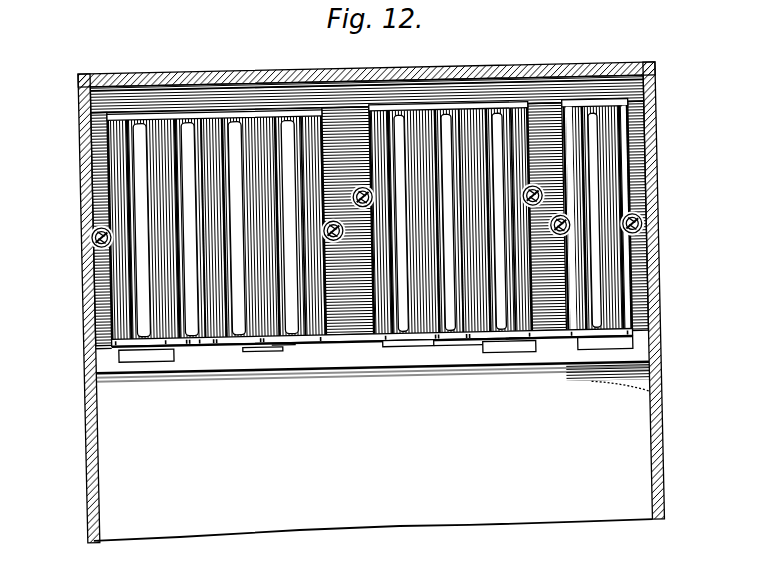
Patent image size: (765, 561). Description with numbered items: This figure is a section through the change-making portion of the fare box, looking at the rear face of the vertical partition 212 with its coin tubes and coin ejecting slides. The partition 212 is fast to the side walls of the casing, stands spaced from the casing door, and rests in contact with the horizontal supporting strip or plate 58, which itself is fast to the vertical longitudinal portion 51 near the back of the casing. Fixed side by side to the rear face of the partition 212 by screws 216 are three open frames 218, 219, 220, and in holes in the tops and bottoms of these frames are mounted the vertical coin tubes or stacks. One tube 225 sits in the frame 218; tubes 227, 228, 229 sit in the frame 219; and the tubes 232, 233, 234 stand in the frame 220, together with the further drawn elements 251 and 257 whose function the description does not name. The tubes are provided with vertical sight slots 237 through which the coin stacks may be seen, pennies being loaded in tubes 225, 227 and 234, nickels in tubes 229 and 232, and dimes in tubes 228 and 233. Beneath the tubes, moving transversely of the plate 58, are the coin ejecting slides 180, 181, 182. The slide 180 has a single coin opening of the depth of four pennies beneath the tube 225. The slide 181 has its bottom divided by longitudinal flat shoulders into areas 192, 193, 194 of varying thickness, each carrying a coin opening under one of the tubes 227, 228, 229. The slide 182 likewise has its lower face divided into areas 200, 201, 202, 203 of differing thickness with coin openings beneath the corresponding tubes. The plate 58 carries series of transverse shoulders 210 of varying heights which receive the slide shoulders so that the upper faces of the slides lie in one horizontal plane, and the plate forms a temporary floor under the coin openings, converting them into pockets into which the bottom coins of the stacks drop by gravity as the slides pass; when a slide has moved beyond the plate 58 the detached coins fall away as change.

The vertical longitudinal portion 51 is at (653, 408).
The horizontal supporting strip 58 is at (329, 365).
The slide 180 is at (614, 355).
The slide 181 is at (477, 360).
The slide 182 is at (209, 353).
The area 192 is at (507, 354).
The area 193 is at (441, 348).
The area 194 is at (379, 348).
The area 200 is at (272, 354).
The area 201 is at (234, 355).
The area 202 is at (182, 350).
The area 203 is at (117, 359).
The transverse shoulders 210 is at (194, 354).
The vertical partition 212 is at (94, 192).
The screws 216 is at (96, 240).
The open frame 218 is at (640, 119).
The open frame 219 is at (526, 134).
The open frame 220 is at (108, 159).
The coin tube 225 is at (618, 175).
The coin tube 227 is at (479, 123).
The coin tube 228 is at (459, 111).
The coin tube 229 is at (391, 116).
The coin tube 232 is at (219, 136).
The coin tube 233 is at (197, 136).
The coin tube 234 is at (124, 139).
The sight slots 237 is at (184, 284).
The electrode plate 251 is at (299, 130).
The channel slot 257 is at (492, 321).